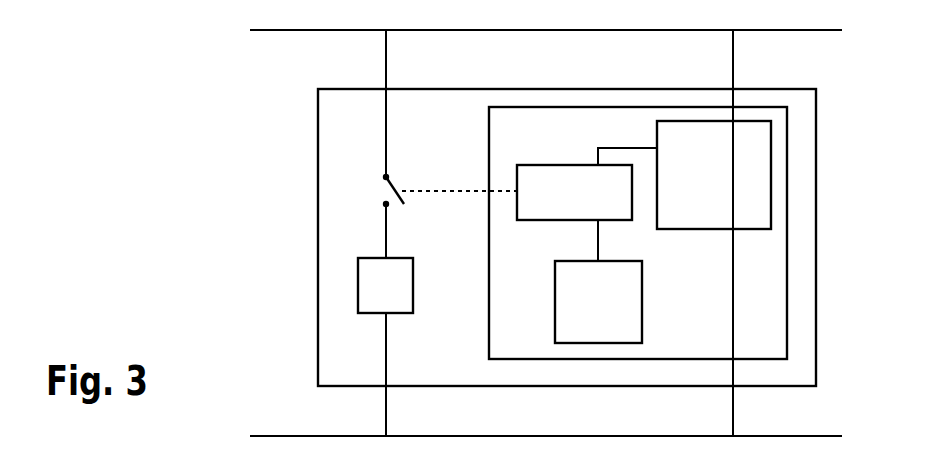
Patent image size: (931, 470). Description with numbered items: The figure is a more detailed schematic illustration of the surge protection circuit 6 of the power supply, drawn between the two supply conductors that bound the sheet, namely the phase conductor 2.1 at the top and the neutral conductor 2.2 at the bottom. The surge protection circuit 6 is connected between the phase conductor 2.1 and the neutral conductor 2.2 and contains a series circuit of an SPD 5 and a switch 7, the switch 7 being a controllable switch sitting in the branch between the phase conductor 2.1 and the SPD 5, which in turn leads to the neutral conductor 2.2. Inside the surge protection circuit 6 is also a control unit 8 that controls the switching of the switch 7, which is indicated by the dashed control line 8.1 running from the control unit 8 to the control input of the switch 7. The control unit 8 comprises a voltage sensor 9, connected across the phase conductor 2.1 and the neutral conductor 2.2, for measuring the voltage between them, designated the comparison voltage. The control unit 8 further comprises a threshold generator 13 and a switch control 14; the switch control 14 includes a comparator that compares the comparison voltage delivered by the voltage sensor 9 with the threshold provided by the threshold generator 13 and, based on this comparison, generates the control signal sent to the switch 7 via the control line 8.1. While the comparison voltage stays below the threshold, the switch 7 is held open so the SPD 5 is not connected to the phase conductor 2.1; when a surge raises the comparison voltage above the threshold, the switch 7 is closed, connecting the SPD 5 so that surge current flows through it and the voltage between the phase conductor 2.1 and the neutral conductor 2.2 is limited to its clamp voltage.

The phase conductor 2.1 is at (268, 31).
The neutral conductor 2.2 is at (278, 435).
The SPD 5 is at (385, 285).
The surge protection circuit 6 is at (567, 237).
The switch 7 is at (383, 191).
The control unit 8 is at (638, 233).
The control line 8.1 is at (450, 188).
The voltage sensor 9 is at (714, 175).
The threshold generator 13 is at (598, 302).
The switch control 14 is at (574, 192).